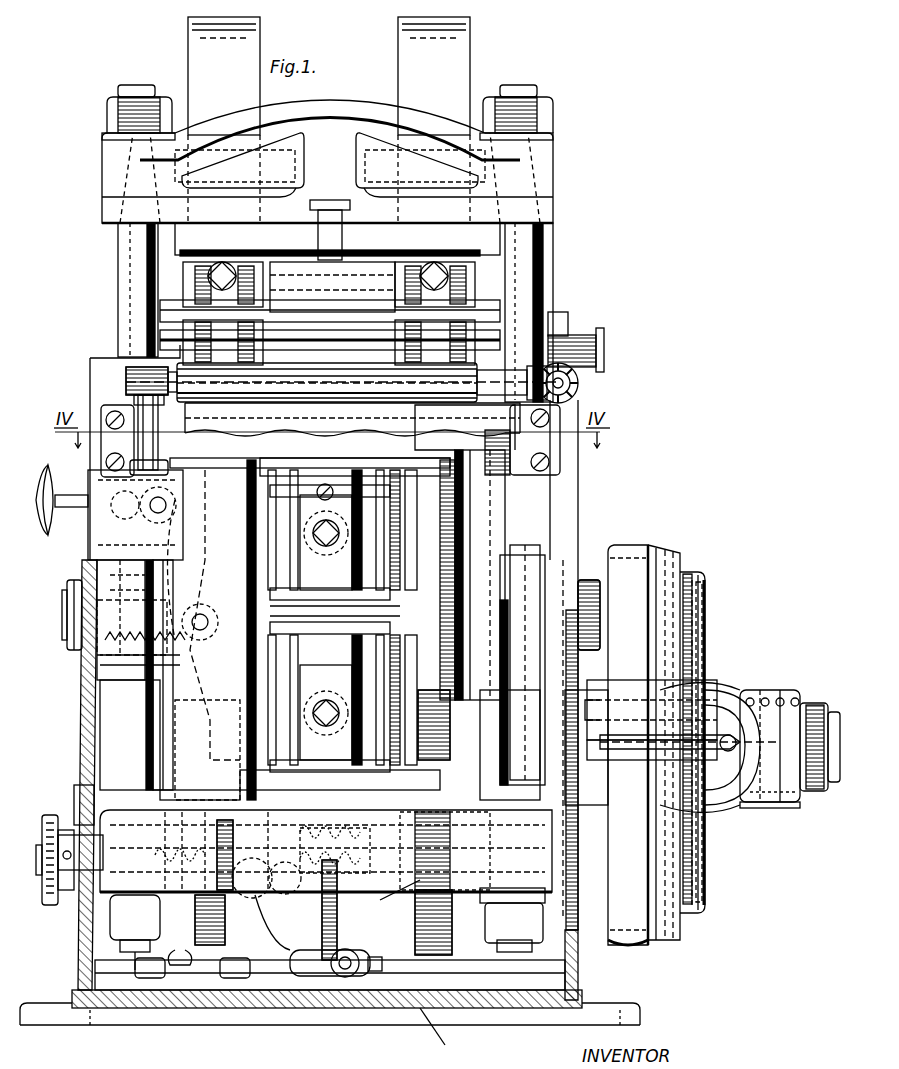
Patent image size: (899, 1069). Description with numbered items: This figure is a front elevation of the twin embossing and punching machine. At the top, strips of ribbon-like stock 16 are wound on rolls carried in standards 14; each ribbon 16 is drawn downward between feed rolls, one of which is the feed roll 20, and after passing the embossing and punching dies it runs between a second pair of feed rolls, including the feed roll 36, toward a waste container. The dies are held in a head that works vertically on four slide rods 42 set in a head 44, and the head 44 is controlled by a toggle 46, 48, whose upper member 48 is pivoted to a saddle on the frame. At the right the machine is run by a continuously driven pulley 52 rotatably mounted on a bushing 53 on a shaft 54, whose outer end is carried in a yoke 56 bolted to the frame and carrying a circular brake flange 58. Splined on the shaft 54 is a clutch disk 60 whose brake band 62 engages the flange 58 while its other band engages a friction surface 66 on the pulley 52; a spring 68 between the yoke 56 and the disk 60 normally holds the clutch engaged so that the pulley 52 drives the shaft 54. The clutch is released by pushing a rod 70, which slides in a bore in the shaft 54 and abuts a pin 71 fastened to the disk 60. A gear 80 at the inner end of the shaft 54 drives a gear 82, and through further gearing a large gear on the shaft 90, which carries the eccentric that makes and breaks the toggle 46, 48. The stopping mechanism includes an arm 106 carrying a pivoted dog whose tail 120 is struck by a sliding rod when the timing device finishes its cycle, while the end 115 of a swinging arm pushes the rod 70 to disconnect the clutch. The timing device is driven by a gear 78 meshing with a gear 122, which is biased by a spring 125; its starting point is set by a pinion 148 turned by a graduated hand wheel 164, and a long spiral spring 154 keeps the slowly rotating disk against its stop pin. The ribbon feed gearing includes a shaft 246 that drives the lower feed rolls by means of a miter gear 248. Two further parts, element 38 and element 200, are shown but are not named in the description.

The ribbon-like stock 16 is at (188, 78).
The standards 14 is at (282, 180).
The feed roll 20 is at (480, 272).
The slide rods 42 is at (120, 262).
The shaft 246 is at (575, 385).
The miter gear 248 is at (565, 398).
The feed roll 36 is at (230, 385).
The frame member / bracket 38 is at (450, 548).
The shaft 90 is at (62, 614).
The clutch disk 60 is at (676, 575).
The friction surface 66 is at (690, 575).
The brake band 62 is at (696, 600).
The circular brake flange 58 is at (704, 625).
The bushing 53 is at (628, 680).
The yoke 56 is at (728, 690).
The pin 71 is at (755, 740).
The hand knob 200 is at (46, 520).
The arm 106 is at (198, 560).
The upper toggle member 48 is at (300, 550).
The tail of dog 120 is at (85, 662).
The rod 70 is at (270, 740).
The gear 80 is at (432, 720).
The toggle member 46 is at (455, 700).
The end of arm 115 is at (225, 738).
The spring 125 is at (370, 842).
The spring 68 is at (762, 808).
The shaft 54 is at (810, 790).
The hand wheel 164 is at (50, 905).
The pinion 148 is at (215, 920).
The spiral spring 154 is at (172, 945).
The gear 78 is at (318, 936).
The gear 122 is at (338, 915).
The head 44 is at (404, 895).
The pulley 52 is at (640, 885).
The gear 82 is at (330, 1028).